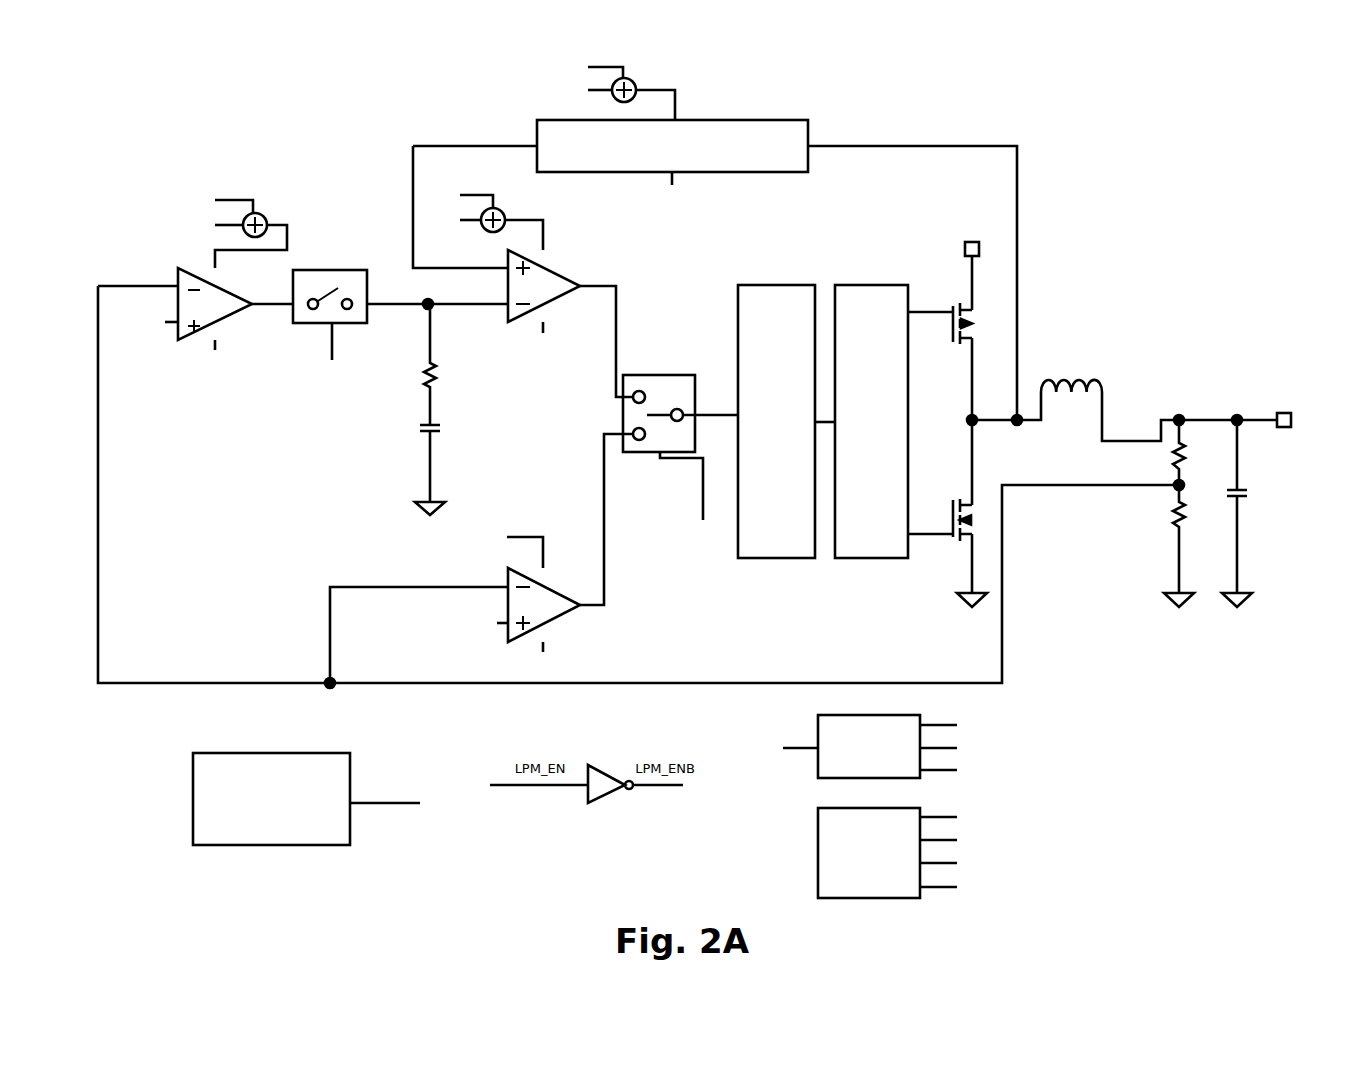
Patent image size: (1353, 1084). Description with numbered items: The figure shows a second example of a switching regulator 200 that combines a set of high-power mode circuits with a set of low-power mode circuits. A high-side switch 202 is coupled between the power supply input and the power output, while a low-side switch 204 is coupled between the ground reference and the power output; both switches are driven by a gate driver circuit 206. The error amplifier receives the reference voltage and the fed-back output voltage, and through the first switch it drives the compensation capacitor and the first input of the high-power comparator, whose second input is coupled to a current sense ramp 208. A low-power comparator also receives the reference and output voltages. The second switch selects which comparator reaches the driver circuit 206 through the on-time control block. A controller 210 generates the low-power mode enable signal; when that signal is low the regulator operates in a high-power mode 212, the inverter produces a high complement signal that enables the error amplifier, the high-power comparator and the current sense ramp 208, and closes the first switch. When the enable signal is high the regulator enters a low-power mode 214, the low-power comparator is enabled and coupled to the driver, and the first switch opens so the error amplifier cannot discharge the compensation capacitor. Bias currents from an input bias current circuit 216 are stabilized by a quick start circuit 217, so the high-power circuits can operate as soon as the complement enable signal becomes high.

The switching regulator 200 is at (156, 120).
The high-side switch 202 is at (940, 325).
The low-side switch 204 is at (940, 521).
The gate driver circuit 206 is at (871, 421).
The current sense ramp 208 is at (715, 240).
The controller 210 is at (309, 799).
The high-power mode 212 is at (636, 341).
The low-power mode 214 is at (635, 519).
The input bias (IB) current circuit 216 is at (901, 853).
The quick start circuit 217 is at (863, 746).